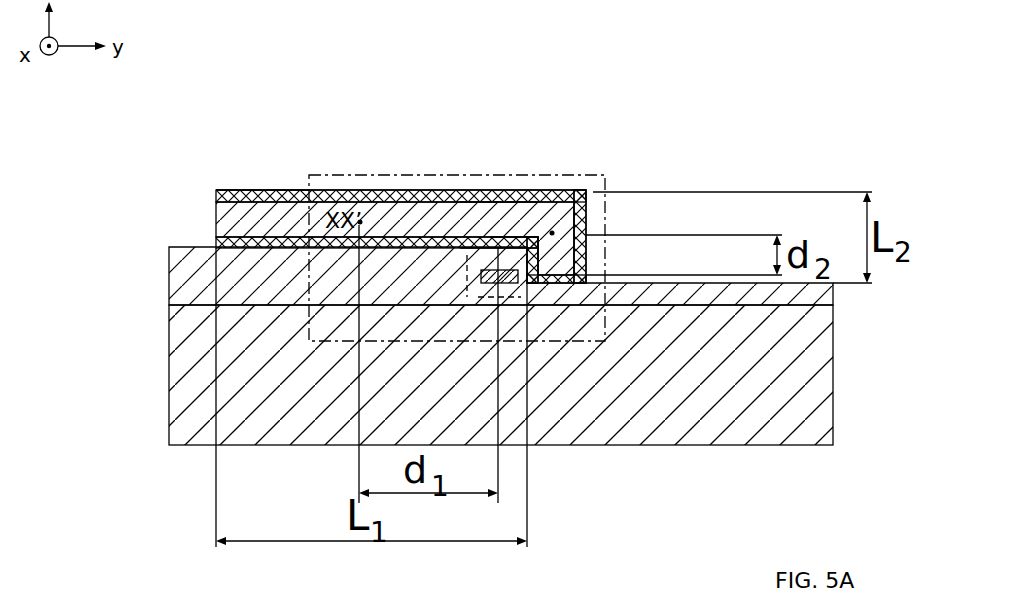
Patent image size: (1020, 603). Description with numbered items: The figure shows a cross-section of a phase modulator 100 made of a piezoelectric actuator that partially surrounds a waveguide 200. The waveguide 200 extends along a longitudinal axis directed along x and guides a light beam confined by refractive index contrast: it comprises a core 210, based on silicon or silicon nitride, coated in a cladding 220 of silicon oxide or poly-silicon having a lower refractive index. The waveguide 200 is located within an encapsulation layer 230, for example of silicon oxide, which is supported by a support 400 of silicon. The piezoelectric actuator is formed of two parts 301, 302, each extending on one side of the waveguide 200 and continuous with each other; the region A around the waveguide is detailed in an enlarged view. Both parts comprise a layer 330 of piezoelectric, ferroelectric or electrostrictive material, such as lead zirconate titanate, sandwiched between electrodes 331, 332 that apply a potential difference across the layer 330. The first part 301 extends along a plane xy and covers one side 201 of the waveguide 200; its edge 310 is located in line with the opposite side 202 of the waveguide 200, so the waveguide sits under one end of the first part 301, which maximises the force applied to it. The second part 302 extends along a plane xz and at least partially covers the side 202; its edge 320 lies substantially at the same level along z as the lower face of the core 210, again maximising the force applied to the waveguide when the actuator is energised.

The phase modulator 100 is at (226, 141).
The waveguide 200 is at (461, 259).
The side of the waveguide 201 is at (478, 248).
The side of the waveguide 202 is at (550, 257).
The core 210 is at (506, 240).
The cladding 220 is at (486, 240).
The encapsulation layer 230 is at (183, 295).
The first part of the piezoelectric actuator 301 is at (267, 190).
The second part of the piezoelectric actuator 302 is at (580, 240).
The edge of the first actuator part 310 is at (533, 255).
The edge of the second actuator part 320 is at (563, 301).
The piezoelectric layer 330 is at (216, 219).
The electrode 331 is at (216, 243).
The electrode 332 is at (216, 193).
The support 400 is at (183, 402).
The region A is at (316, 176).